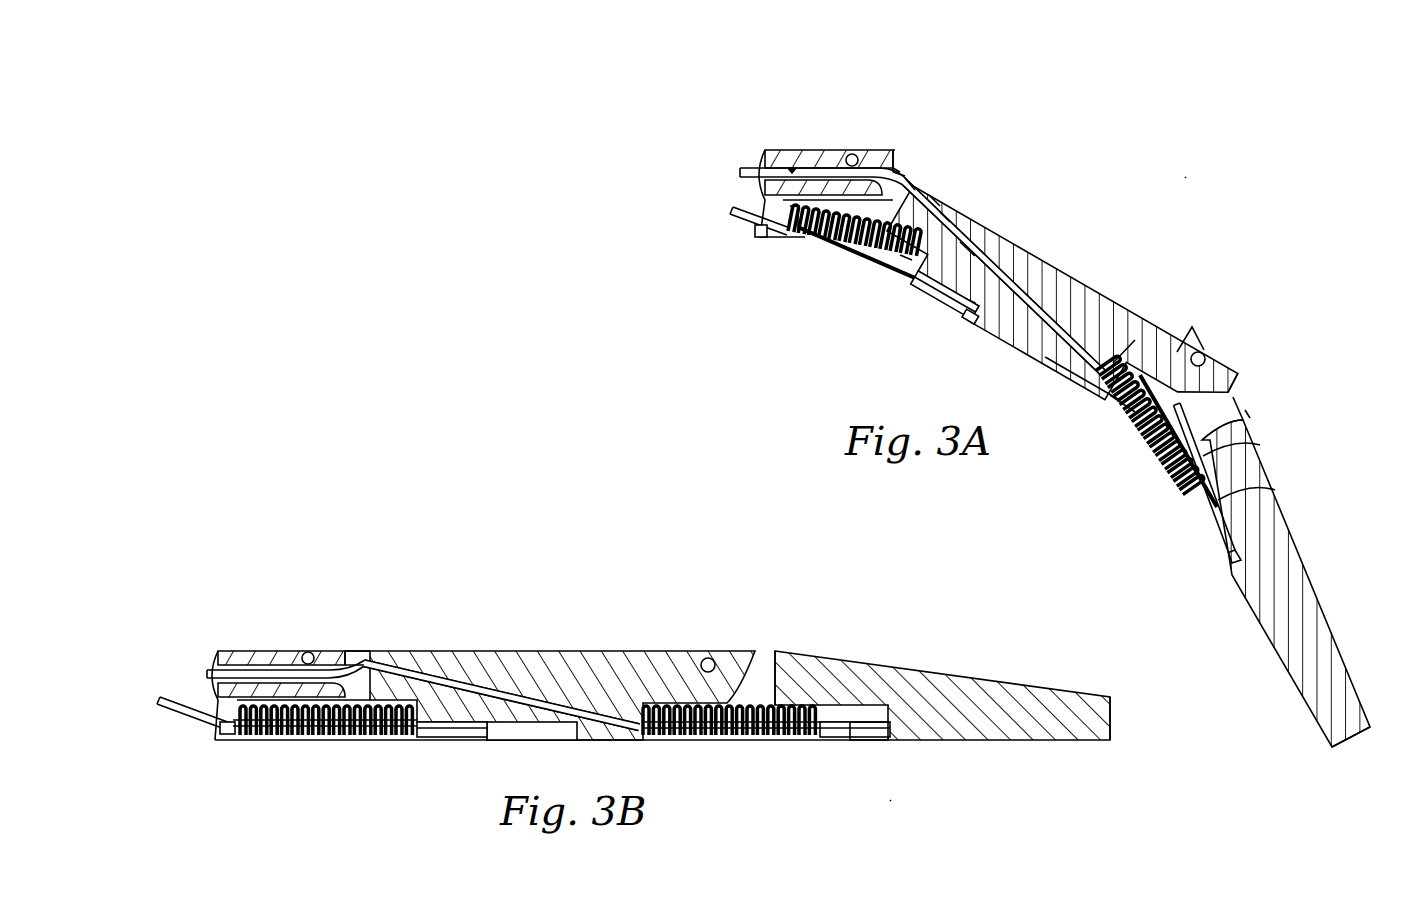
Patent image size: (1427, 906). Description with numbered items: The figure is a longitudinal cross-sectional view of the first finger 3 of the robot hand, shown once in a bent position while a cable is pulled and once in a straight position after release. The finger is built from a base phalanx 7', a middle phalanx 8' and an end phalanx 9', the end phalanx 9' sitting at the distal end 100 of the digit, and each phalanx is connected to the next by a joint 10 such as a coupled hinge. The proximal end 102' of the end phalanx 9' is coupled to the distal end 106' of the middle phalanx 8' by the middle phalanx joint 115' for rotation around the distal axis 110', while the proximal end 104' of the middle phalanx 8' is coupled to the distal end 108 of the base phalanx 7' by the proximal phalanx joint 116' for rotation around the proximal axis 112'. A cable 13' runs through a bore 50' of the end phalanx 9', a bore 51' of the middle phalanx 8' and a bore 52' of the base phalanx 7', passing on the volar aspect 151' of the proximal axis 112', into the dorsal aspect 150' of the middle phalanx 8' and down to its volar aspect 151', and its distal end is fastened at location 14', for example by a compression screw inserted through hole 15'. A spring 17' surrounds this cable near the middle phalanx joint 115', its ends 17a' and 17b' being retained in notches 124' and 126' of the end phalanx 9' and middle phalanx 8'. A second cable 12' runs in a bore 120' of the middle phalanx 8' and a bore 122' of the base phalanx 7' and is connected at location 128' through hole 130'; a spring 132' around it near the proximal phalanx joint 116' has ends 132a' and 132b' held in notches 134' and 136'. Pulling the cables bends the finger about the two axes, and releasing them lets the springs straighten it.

In FIG. 3A, the first finger 3 is at (1187, 176).
In FIG. 3B, the first finger 3 is at (892, 803).
In FIG. 3A, the base phalanx 7' is at (813, 165).
In FIG. 3B, the base phalanx 7' is at (549, 668).
In FIG. 3A, the middle phalanx 8' is at (1054, 315).
In FIG. 3B, the middle phalanx 8' is at (550, 668).
In FIG. 3A, the end phalanx 9' is at (1286, 583).
In FIG. 3B, the end phalanx 9' is at (942, 675).
In FIG. 3A, the joint 10 is at (873, 122).
In FIG. 3B, the joint 10 is at (350, 627).
In FIG. 3A, the cable 12' is at (737, 227).
In FIG. 3B, the cable 12' is at (184, 727).
In FIG. 3A, the cable 13' is at (899, 249).
In FIG. 3B, the cable 13' is at (397, 680).
In FIG. 3A, the location 14' is at (1195, 480).
In FIG. 3A, the hole 15' is at (1209, 575).
In FIG. 3A, the spring 17' is at (1156, 431).
In FIG. 3B, the spring 17' is at (766, 747).
In FIG. 3A, the spring end 17a' is at (1263, 455).
In FIG. 3A, the spring end 17b' is at (1084, 448).
In FIG. 3A, the bore 50' is at (1275, 491).
In FIG. 3A, the bore 51' is at (1002, 222).
In FIG. 3A, the bore 52' is at (791, 133).
In FIG. 3A, the distal end 100 is at (1360, 745).
In FIG. 3B, the distal end 100 is at (1118, 740).
In FIG. 3A, the proximal end 102' is at (1313, 409).
In FIG. 3A, the proximal end 104' is at (945, 157).
In FIG. 3A, the distal end 106' is at (1270, 384).
In FIG. 3A, the distal end 108 is at (898, 160).
In FIG. 3A, the distal axis 110' is at (1216, 337).
In FIG. 3B, the distal axis 110' is at (691, 637).
In FIG. 3A, the proximal axis 112' is at (838, 130).
In FIG. 3B, the proximal axis 112' is at (289, 632).
In FIG. 3A, the middle phalanx joint 115' is at (1285, 347).
In FIG. 3B, the middle phalanx joint 115' is at (793, 645).
In FIG. 3A, the proximal phalanx joint 116' is at (949, 127).
In FIG. 3B, the proximal phalanx joint 116' is at (383, 625).
In FIG. 3A, the bore 120' is at (942, 317).
In FIG. 3B, the bore 120' is at (452, 751).
In FIG. 3A, the bore 122' is at (758, 253).
In FIG. 3B, the bore 122' is at (210, 752).
In FIG. 3A, the notch 124' is at (1269, 427).
In FIG. 3A, the notch 126' is at (1146, 321).
In FIG. 3A, the location 128' is at (887, 278).
In FIG. 3A, the hole 130' is at (981, 336).
In FIG. 3A, the spring 132' is at (855, 253).
In FIG. 3B, the spring 132' is at (325, 748).
In FIG. 3A, the spring end 132a' is at (869, 299).
In FIG. 3A, the spring end 132b' is at (784, 262).
In FIG. 3A, the notch 134' is at (975, 198).
In FIG. 3A, the notch 136' is at (821, 247).
In FIG. 3A, the dorsal aspect 150' is at (984, 175).
In FIG. 3A, the volar aspect 151' is at (1079, 392).